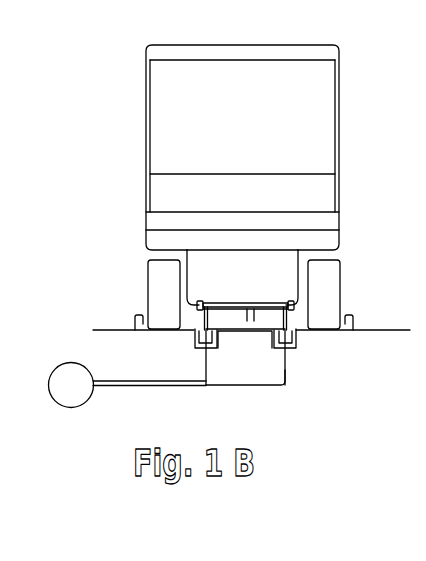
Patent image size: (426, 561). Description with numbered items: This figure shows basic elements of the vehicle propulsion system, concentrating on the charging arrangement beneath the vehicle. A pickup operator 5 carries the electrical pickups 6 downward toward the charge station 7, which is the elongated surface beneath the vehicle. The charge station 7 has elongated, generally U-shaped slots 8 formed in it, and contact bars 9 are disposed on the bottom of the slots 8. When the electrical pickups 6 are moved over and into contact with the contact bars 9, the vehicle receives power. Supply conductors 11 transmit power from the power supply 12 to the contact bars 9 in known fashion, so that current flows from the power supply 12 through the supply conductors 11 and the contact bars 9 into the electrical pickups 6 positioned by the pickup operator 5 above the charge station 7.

The pickup operator 5 is at (239, 293).
The electrical pickups 6 is at (192, 311).
The charge station 7 is at (125, 320).
The slots 8 is at (186, 342).
The contact bars 9 is at (277, 328).
The supply conductors 11 is at (276, 389).
The power supply 12 is at (96, 404).